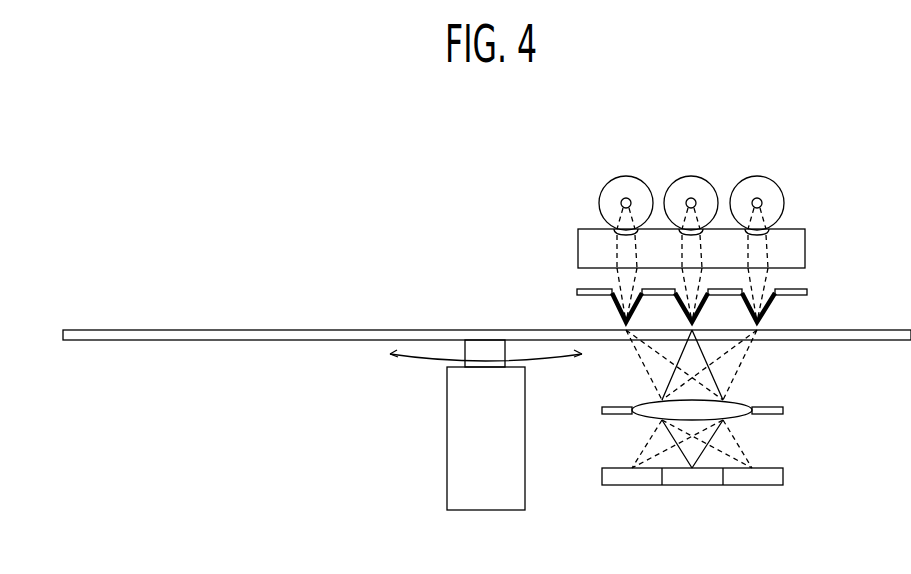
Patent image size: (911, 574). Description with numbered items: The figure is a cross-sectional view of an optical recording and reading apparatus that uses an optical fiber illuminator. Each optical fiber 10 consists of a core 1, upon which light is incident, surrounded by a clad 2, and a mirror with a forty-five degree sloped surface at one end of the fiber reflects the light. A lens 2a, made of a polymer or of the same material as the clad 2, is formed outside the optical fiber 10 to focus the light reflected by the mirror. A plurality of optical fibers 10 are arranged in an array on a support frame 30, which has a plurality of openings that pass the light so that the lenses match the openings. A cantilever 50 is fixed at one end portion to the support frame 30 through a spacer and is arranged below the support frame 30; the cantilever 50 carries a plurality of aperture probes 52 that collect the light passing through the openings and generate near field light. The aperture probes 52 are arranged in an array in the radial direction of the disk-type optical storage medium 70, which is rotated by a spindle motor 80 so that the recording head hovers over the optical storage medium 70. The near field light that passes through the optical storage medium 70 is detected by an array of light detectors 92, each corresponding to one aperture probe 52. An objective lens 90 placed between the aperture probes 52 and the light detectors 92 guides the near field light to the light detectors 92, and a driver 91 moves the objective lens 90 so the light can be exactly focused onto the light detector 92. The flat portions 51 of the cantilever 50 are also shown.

The optical fiber 10 is at (657, 169).
The core 1 is at (625, 198).
The clad 2 is at (632, 178).
The lens 2a is at (614, 233).
The support frame 30 is at (795, 230).
The cantilever 50 is at (706, 294).
The flat portion 51 is at (577, 292).
The aperture probes 52 is at (615, 303).
The optical storage medium 70 is at (268, 330).
The spindle motor 80 is at (447, 422).
The objective lens 90 is at (650, 400).
The driver 91 is at (602, 411).
The light detectors 92 is at (622, 485).